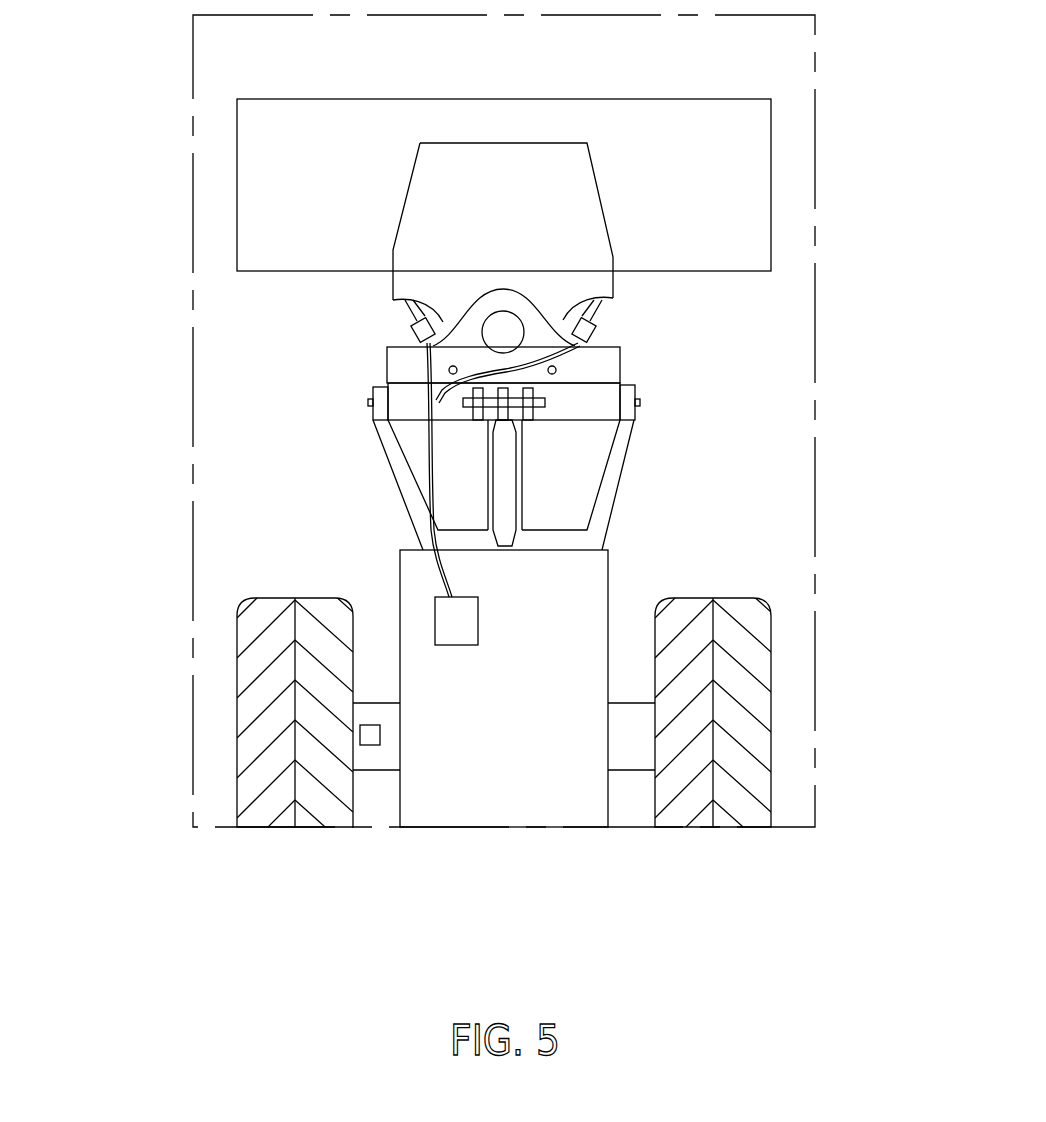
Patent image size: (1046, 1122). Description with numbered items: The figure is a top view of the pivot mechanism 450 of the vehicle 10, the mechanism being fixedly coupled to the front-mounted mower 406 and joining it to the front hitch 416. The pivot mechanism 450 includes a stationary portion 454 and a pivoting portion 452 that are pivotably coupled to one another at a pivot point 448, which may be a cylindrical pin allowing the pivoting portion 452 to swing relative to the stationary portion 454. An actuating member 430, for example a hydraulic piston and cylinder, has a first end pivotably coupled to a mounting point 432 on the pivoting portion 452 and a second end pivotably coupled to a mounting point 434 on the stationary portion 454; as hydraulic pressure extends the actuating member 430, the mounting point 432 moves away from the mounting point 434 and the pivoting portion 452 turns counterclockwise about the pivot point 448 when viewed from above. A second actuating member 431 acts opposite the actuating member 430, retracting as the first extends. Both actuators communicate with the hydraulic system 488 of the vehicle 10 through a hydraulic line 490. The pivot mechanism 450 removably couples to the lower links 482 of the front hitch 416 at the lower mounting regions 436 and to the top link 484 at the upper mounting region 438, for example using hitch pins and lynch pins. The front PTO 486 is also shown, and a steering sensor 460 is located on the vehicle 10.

The vehicle 10 is at (890, 347).
The front-mounted mower 406 is at (567, 97).
The front hitch 416 is at (543, 485).
The actuating member 430 is at (593, 318).
The second actuating member 431 is at (408, 310).
The mounting point 432 is at (605, 287).
The mounting point 434 is at (556, 366).
The lower mounting regions 436 is at (372, 403).
The upper mounting region 438 is at (533, 398).
The pivot point 448 is at (505, 333).
The pivot mechanism 450 is at (162, 229).
The pivoting portion 452 is at (787, 167).
The stationary portion 454 is at (368, 352).
The steering sensor 460 is at (380, 735).
The lower link 482 is at (390, 487).
The top link 484 is at (522, 488).
The front PTO 486 is at (487, 478).
The hydraulic system 488 is at (478, 636).
The hydraulic line 490 is at (428, 515).